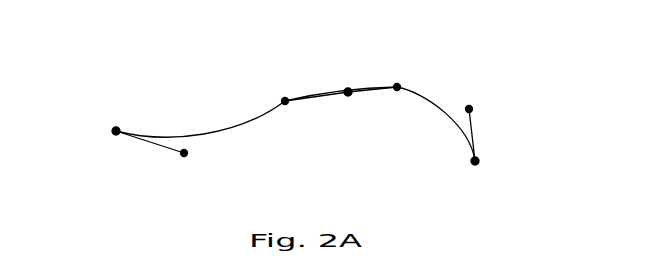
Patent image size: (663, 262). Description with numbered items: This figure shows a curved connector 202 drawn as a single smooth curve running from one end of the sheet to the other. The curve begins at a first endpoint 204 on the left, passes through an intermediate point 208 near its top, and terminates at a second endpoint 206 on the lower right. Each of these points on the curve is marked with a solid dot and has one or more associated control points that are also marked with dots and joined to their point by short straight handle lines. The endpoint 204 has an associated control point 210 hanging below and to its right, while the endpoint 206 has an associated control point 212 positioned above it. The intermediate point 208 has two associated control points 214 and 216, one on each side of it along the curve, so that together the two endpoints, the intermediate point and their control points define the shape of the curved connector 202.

The curved connector 202 is at (398, 35).
The endpoint 204 is at (116, 131).
The endpoint 206 is at (475, 161).
The intermediate point 208 is at (348, 92).
The control point 210 is at (184, 153).
The control point 212 is at (469, 109).
The control point 214 is at (285, 101).
The control point 216 is at (397, 87).